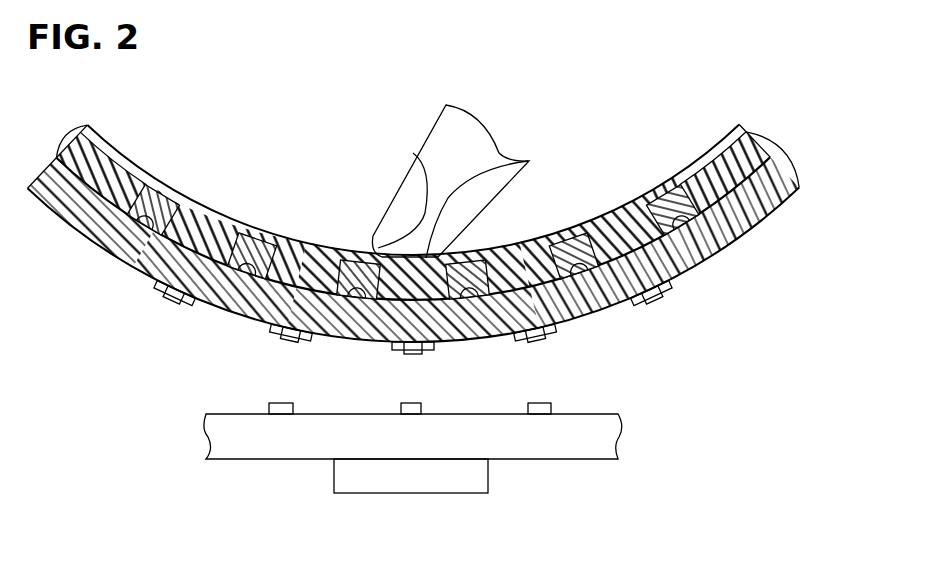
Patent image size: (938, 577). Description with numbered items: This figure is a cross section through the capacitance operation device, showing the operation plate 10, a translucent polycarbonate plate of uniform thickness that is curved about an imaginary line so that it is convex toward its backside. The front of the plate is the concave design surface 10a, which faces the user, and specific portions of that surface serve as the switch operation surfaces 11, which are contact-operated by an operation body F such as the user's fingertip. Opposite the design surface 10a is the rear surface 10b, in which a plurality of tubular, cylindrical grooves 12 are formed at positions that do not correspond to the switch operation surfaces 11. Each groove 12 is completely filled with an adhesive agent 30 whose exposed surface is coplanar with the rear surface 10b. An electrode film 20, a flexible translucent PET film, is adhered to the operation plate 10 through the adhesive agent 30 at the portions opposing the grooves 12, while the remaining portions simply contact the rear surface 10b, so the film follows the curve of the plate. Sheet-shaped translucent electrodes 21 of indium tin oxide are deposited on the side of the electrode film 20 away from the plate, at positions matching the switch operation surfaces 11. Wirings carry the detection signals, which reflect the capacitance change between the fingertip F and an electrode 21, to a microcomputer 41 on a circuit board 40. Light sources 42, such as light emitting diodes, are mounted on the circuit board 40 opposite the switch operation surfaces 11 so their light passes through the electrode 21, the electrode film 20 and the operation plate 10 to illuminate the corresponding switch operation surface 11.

The operation plate 10 is at (100, 143).
The design surface 10a is at (715, 118).
The rear surface 10b is at (723, 182).
The switch operation surface 11 is at (238, 209).
The groove 12 is at (137, 180).
The electrode film 20 is at (70, 205).
The electrode 21 is at (165, 297).
The adhesive agent 30 is at (118, 252).
The circuit board 40 is at (240, 447).
The microcomputer 41 is at (408, 482).
The light source 42 is at (422, 407).
The operation body (fingertip) F is at (424, 108).